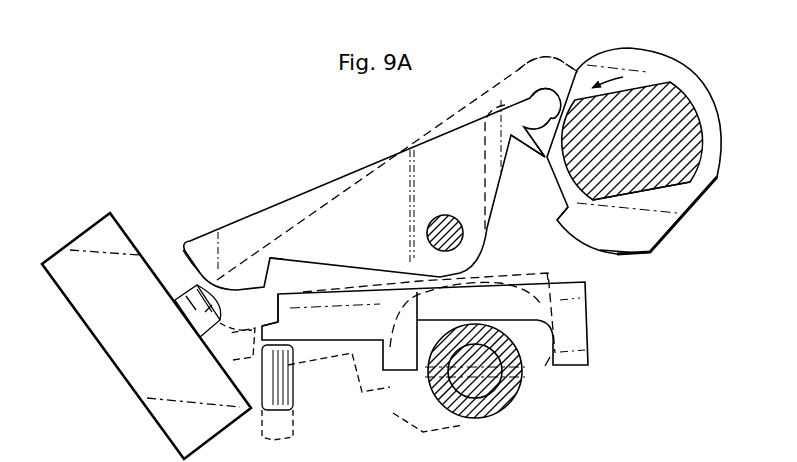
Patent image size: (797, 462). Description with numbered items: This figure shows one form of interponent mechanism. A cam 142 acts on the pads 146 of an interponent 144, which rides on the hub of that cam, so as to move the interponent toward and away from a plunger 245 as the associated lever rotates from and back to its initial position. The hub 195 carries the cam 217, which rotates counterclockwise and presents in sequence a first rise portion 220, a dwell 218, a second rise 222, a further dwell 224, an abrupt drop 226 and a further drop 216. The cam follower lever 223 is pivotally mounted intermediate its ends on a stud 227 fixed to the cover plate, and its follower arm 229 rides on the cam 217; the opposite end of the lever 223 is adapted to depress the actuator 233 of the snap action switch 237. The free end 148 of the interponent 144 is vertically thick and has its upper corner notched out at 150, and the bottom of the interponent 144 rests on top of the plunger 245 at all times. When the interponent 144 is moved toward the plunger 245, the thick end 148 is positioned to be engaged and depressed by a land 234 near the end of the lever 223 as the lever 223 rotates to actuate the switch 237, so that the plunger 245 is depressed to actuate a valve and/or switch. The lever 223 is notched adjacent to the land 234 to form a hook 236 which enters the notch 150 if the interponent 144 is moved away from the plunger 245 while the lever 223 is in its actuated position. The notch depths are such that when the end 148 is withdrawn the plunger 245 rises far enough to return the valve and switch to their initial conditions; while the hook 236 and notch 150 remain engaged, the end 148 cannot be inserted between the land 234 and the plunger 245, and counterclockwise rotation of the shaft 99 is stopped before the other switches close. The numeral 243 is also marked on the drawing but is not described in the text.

The shaft 99 is at (476, 383).
The cam 142 is at (519, 365).
The interponent 144 is at (590, 318).
The pads 146 is at (545, 366).
The free end 148 is at (303, 295).
The notch 150 is at (283, 322).
The hub 195 is at (670, 120).
The further drop 216 is at (545, 157).
The cam 217 is at (690, 192).
The dwell 218 is at (670, 57).
The first rise portion 220 is at (562, 60).
The second rise 222 is at (670, 237).
The cam follower lever 223 is at (297, 197).
The dwell 224 is at (617, 255).
The abrupt drop 226 is at (568, 212).
The stud 227 is at (445, 226).
The follower arm 229 is at (540, 100).
The actuator 233 is at (183, 296).
The land 234 is at (281, 311).
The hook 236 is at (283, 260).
The snap action switch 237 is at (127, 353).
The lever lip 243 is at (200, 278).
The plunger 245 is at (293, 400).